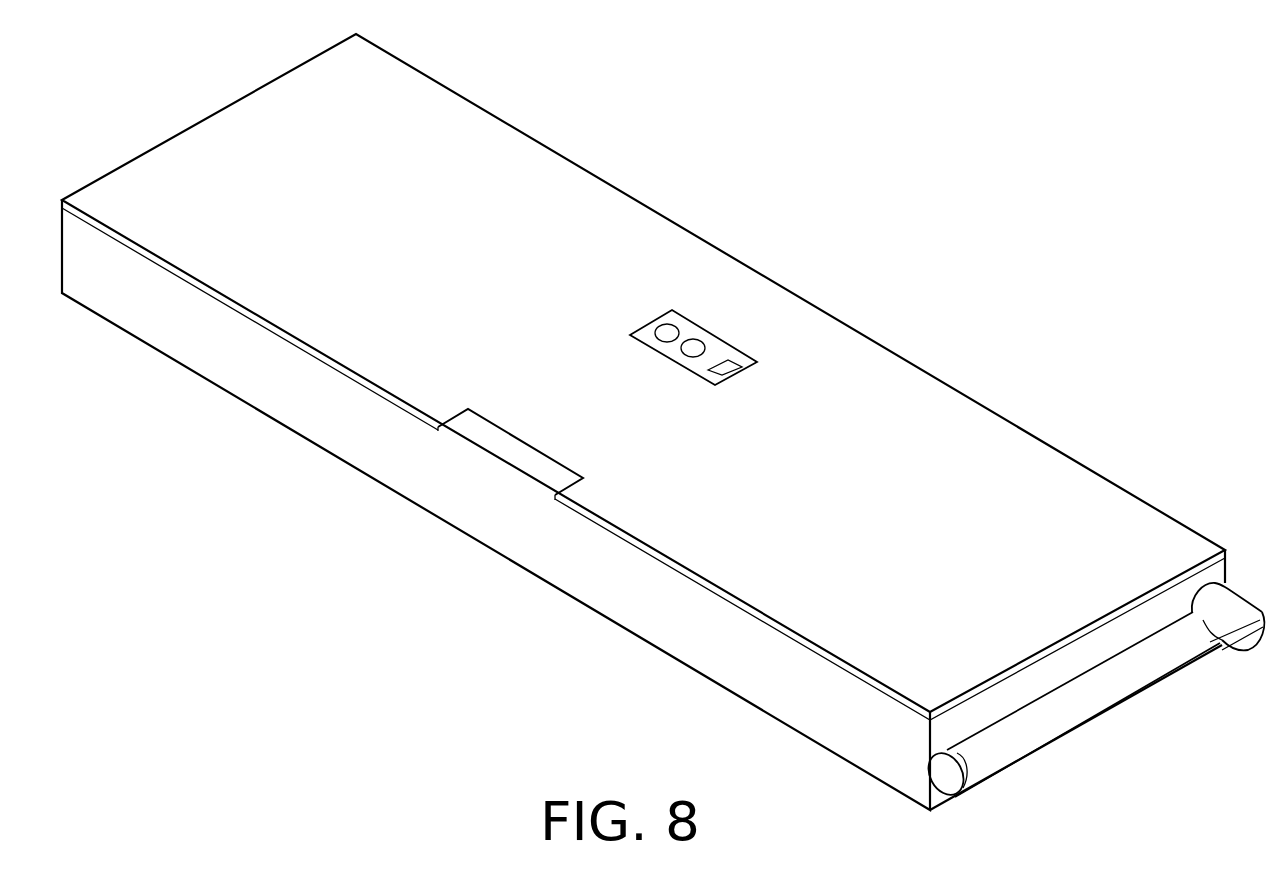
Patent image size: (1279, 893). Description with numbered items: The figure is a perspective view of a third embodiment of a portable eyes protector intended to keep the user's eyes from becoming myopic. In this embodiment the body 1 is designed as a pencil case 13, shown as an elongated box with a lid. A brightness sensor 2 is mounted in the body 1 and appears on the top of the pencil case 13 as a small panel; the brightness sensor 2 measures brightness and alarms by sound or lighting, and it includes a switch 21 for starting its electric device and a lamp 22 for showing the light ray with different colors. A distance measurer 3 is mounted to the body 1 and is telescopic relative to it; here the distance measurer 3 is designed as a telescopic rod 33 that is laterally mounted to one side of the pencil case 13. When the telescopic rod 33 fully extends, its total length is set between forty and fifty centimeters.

The body 1 is at (995, 372).
The pencil case 13 is at (640, 597).
The brightness sensor 2 is at (722, 313).
The switch 21 is at (727, 363).
The lamp 22 is at (665, 330).
The distance measurer 3 is at (1140, 721).
The telescopic rod 33 is at (1037, 715).